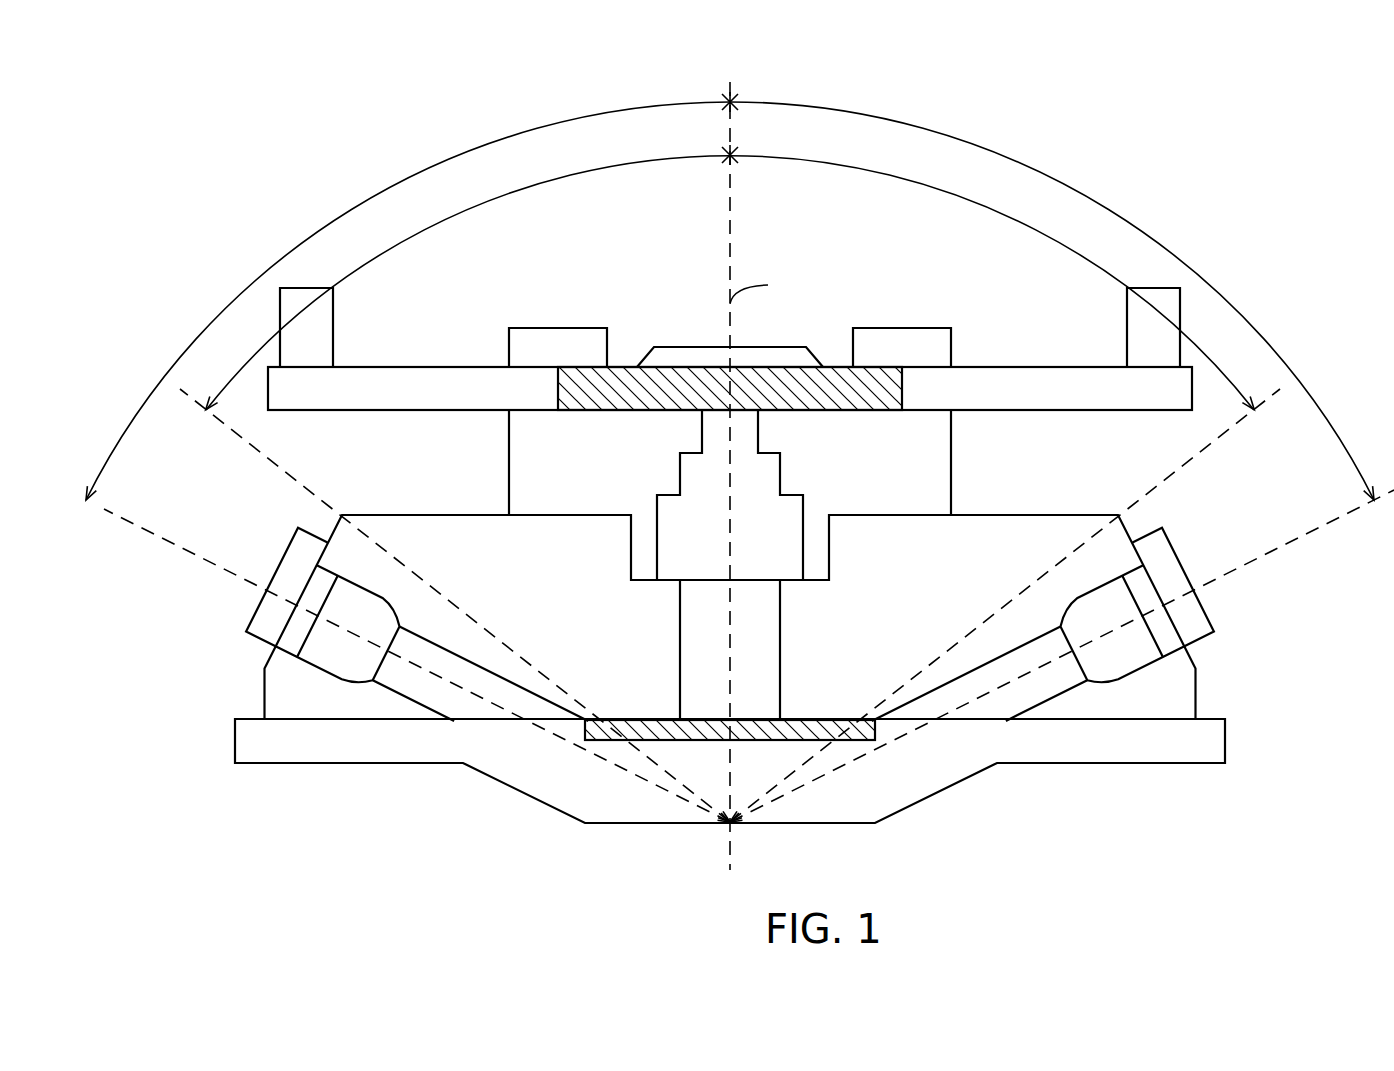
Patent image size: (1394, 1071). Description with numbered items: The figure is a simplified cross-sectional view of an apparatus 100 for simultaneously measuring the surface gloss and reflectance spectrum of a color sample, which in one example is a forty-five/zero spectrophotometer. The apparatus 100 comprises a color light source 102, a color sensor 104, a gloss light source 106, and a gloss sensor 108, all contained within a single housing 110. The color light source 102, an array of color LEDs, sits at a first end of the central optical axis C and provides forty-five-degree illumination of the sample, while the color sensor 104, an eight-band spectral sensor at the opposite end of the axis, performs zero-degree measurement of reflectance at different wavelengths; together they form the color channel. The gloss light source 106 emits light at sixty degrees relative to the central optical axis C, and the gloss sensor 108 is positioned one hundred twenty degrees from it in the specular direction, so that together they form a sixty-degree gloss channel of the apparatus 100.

The apparatus 100 is at (127, 58).
The color light source 102 is at (825, 744).
The color sensor 104 is at (730, 390).
The gloss light source 106 is at (293, 583).
The gloss sensor 108 is at (1170, 585).
The housing 110 is at (400, 366).